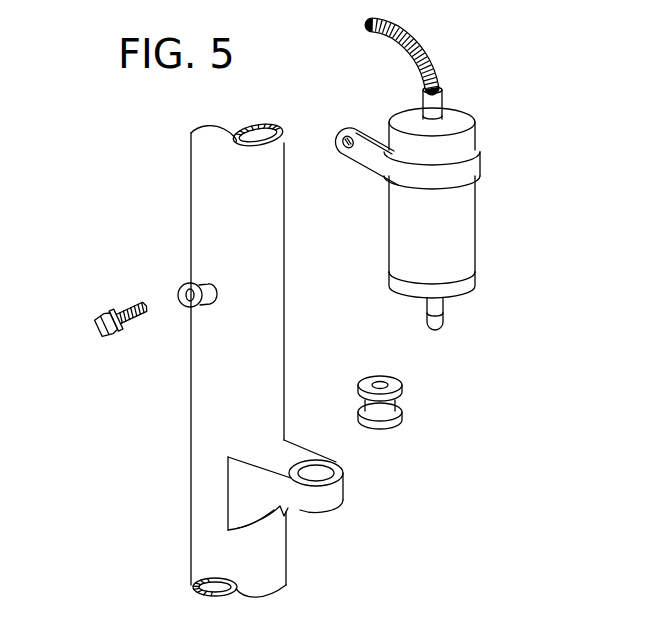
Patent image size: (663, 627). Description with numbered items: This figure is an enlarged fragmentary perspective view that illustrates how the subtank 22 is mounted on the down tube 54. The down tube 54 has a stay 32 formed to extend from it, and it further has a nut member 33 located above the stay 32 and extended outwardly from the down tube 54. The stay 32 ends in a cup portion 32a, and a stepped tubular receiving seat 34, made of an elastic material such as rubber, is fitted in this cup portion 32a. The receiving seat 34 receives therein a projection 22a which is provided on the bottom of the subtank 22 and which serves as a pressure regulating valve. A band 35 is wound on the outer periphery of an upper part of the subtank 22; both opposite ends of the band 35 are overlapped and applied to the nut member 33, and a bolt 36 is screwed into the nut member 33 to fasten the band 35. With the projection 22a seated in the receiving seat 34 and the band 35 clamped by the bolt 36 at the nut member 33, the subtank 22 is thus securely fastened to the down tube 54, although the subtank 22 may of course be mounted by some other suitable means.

The subtank 22 is at (466, 182).
The projection 22a is at (446, 313).
The stay 32 is at (293, 497).
The cup portion 32a is at (345, 478).
The nut member 33 is at (189, 308).
The stepped tubular receiving seat 34 is at (401, 408).
The band 35 is at (367, 158).
The bolt 36 is at (100, 331).
The down tube 54 is at (203, 423).